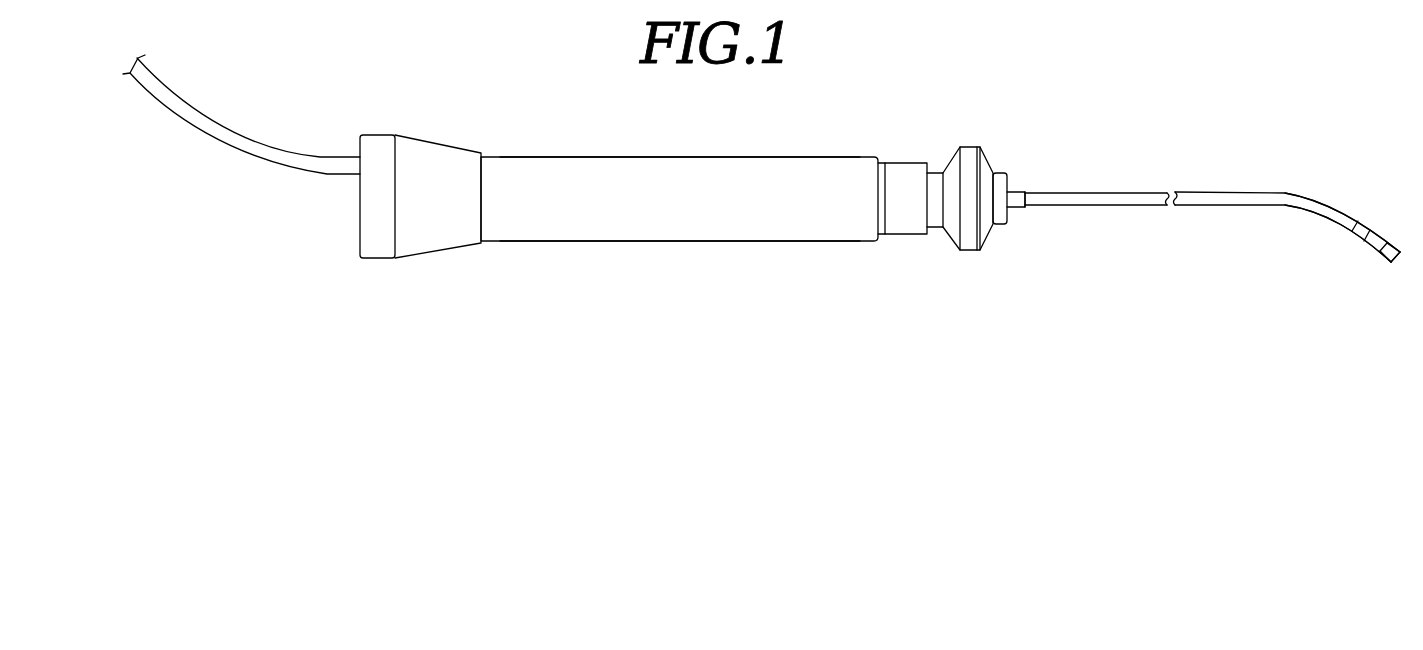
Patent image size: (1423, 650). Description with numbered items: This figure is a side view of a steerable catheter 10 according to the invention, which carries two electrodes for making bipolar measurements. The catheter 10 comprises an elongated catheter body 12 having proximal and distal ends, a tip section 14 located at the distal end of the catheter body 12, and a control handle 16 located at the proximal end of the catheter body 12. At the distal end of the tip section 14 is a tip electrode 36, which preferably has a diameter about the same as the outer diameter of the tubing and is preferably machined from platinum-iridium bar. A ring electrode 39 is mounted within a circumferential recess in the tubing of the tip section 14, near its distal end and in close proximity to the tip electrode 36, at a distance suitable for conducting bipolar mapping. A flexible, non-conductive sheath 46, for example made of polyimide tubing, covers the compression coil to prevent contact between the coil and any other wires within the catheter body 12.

The catheter 10 is at (812, 143).
The catheter body 12 is at (1110, 200).
The tip section 14 is at (1352, 222).
The control handle 16 is at (570, 178).
The tip electrode 36 is at (1394, 250).
The ring electrode 39 is at (1361, 234).
The non-conductive sheath 46 is at (170, 93).